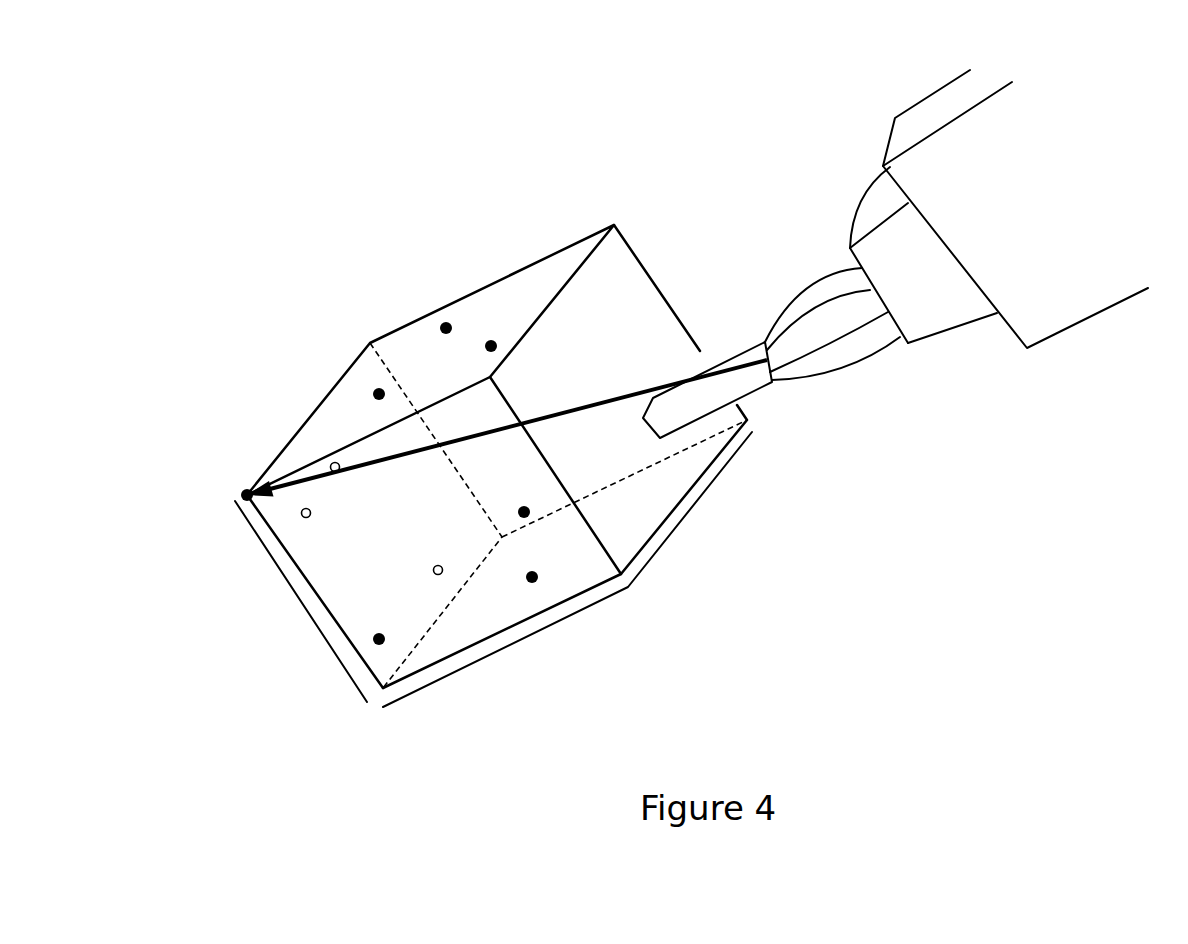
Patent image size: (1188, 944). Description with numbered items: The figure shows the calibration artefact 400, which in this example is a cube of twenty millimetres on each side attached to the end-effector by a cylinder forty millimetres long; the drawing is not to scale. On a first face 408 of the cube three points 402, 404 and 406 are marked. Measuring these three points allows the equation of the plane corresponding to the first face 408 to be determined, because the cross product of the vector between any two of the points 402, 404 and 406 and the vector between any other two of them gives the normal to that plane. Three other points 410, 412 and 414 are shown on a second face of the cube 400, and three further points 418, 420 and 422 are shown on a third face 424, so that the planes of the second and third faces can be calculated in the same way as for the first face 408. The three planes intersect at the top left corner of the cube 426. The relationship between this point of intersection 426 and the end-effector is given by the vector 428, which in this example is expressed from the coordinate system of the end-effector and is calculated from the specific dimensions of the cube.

The calibration artefact 400 is at (689, 627).
The point on first face 402 is at (446, 322).
The point on first face 404 is at (377, 388).
The point on first face 406 is at (491, 340).
The first face 408 is at (560, 268).
The point on second face 410 is at (552, 555).
The point on second face 412 is at (525, 506).
The point on second face 414 is at (380, 633).
The point on third face 418 is at (311, 512).
The point on third face 420 is at (333, 462).
The point on third face 422 is at (438, 565).
The third face 424 is at (278, 539).
The top left corner of the cube 426 is at (247, 489).
The vector 428 is at (554, 414).